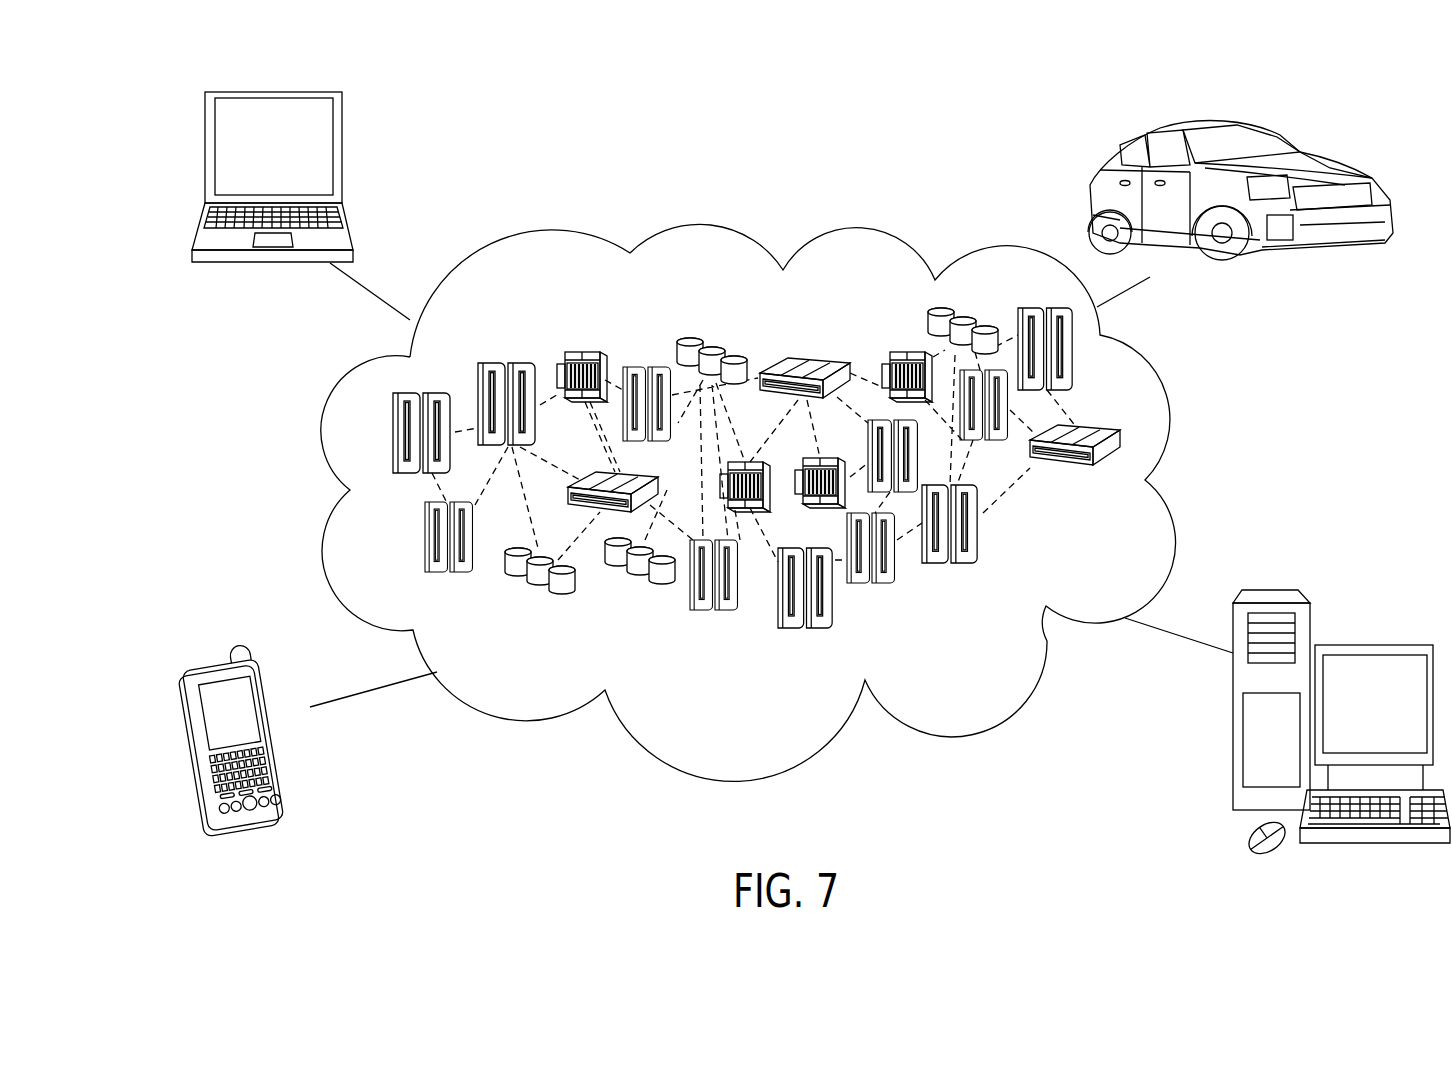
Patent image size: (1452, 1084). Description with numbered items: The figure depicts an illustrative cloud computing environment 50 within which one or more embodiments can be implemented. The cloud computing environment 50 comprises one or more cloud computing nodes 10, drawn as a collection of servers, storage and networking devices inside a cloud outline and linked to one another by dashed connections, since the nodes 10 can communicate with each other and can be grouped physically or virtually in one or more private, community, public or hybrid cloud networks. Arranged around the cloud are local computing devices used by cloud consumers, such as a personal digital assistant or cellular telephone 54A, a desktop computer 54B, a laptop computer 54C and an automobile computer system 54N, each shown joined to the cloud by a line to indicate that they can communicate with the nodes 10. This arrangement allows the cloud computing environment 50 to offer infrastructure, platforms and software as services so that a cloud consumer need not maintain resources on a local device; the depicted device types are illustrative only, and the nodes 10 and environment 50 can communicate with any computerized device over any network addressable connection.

The cloud computing nodes 10 is at (1152, 535).
The cloud computing environment 50 is at (1170, 403).
The personal digital assistant (PDA) or cellular telephone 54A is at (178, 745).
The desktop computer 54B is at (1368, 646).
The laptop computer 54C is at (204, 151).
The computing device 54N is at (1296, 147).